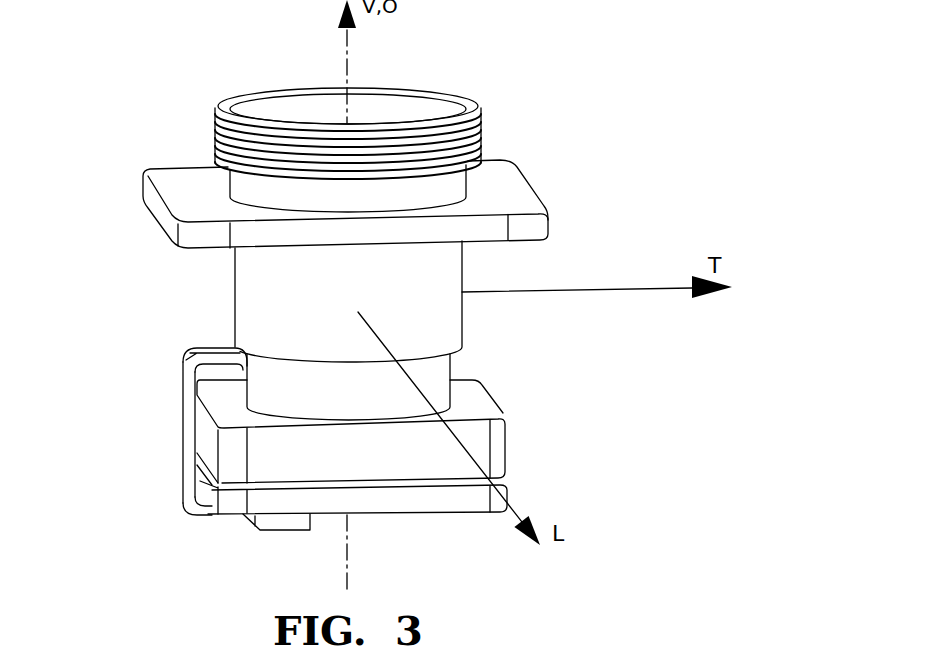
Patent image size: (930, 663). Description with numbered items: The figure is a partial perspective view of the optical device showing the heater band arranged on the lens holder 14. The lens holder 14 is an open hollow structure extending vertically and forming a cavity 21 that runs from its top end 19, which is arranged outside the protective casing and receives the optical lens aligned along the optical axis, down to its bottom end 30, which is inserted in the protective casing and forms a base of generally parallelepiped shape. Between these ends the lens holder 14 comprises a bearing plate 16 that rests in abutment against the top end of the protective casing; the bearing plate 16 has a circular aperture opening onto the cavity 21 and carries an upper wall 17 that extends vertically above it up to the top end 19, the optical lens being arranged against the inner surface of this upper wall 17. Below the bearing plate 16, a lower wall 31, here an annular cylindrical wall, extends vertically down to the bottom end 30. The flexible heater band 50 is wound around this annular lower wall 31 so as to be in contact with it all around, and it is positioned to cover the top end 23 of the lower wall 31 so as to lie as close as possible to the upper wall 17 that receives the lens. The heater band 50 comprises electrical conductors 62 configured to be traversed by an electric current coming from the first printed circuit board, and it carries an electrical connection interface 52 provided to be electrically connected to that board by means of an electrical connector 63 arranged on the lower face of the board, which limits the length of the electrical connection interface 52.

The lens holder 14 is at (638, 61).
The bearing plate 16 is at (527, 188).
The upper wall 17 is at (225, 181).
The top end 19 is at (470, 83).
The cavity 21 is at (290, 108).
The top end of the lower wall 23 is at (470, 259).
The bottom end 30 is at (519, 471).
The lower wall 31 is at (183, 331).
The heater band 50 is at (470, 329).
The electrical connection interface 52 is at (181, 456).
The electrical conductors 62 is at (237, 292).
The electrical connector 63 is at (256, 529).